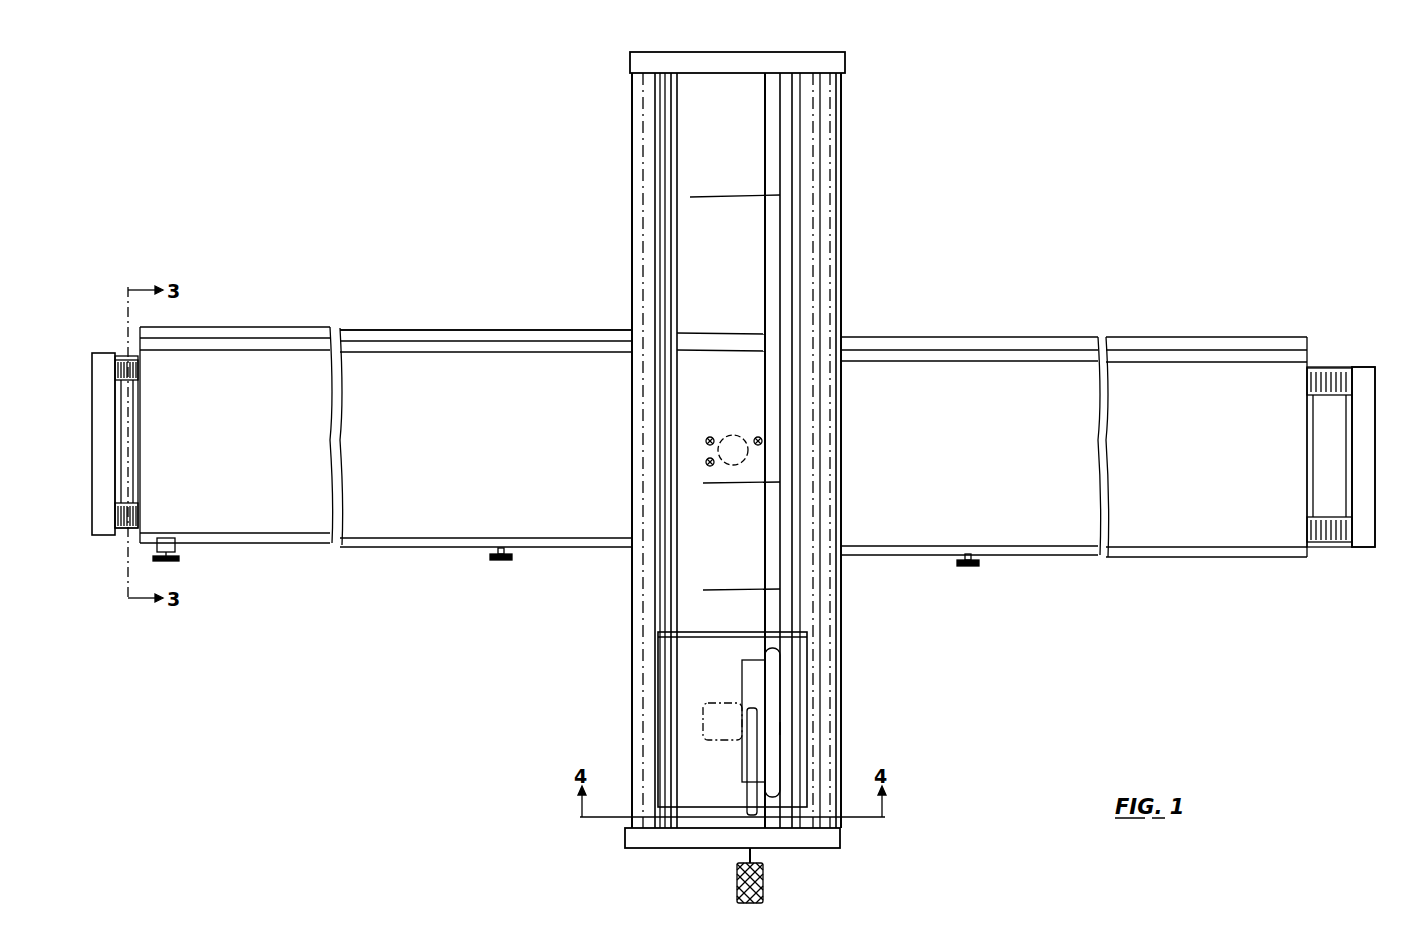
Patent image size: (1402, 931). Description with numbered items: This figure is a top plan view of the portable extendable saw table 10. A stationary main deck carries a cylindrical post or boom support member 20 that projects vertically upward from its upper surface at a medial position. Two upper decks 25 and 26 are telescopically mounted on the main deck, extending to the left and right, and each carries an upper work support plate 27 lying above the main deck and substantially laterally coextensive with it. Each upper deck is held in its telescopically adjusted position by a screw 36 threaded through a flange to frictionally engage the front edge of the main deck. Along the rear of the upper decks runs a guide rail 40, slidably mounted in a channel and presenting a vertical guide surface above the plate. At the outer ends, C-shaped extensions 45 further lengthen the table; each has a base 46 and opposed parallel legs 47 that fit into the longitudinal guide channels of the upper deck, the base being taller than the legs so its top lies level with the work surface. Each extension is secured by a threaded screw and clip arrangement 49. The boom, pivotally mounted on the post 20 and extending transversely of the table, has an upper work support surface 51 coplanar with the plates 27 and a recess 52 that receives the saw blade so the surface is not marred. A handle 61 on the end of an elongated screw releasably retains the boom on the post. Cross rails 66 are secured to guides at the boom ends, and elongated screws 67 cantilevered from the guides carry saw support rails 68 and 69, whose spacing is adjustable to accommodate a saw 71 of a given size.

The portable extendable saw table 10 is at (913, 595).
The cylindrical post or boom support member 20 is at (737, 460).
The upper deck 25 is at (357, 547).
The upper deck 26 is at (1152, 550).
The upper work support plate 27 is at (466, 452).
The screw 36 is at (506, 561).
The guide rail 40 is at (396, 330).
The C-shaped extension 45 is at (1380, 545).
The base 46 is at (96, 520).
The legs 47 is at (120, 356).
The threaded screw and clip arrangement 49 is at (172, 560).
The upper work support surface 51 is at (727, 240).
The recess 52 is at (770, 287).
The handle 61 is at (765, 884).
The cross rails 66 is at (636, 62).
The elongated screws 67 is at (757, 437).
The saw support rail 68 is at (843, 631).
The saw support rail 69 is at (630, 631).
The saw 71 is at (731, 750).